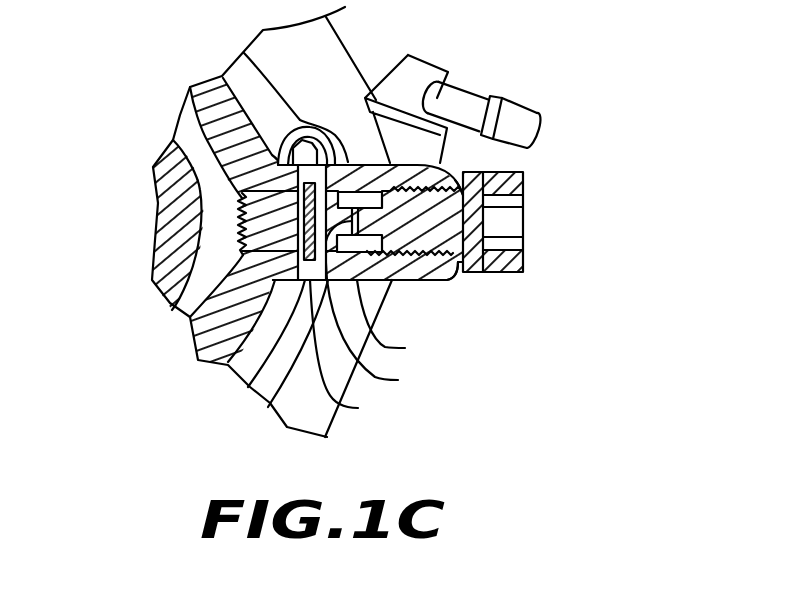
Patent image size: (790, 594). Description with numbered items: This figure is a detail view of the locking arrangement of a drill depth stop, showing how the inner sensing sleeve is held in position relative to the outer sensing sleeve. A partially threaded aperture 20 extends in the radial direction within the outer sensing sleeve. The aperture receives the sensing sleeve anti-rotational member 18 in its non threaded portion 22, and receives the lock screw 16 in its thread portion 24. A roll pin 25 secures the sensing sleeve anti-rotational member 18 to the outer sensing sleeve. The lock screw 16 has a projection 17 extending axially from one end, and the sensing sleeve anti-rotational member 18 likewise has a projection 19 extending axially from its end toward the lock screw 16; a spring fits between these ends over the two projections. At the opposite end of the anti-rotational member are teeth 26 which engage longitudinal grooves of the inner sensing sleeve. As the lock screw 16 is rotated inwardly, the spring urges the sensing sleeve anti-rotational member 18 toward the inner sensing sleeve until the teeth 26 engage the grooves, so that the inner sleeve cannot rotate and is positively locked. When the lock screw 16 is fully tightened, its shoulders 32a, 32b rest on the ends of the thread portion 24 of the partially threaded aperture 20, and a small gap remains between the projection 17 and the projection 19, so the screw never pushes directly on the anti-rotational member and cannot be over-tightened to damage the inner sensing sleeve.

The lock screw 16 is at (525, 263).
The projection 17 is at (405, 348).
The sensing sleeve anti-rotational member 18 is at (257, 242).
The projection 19 is at (398, 380).
The partially threaded aperture 20 is at (416, 282).
The non threaded portion 22 is at (346, 163).
The thread portion 24 is at (417, 182).
The roll pin 25 is at (358, 408).
The teeth 26 is at (245, 223).
The shoulder 32a is at (460, 166).
The shoulder 32b is at (455, 270).